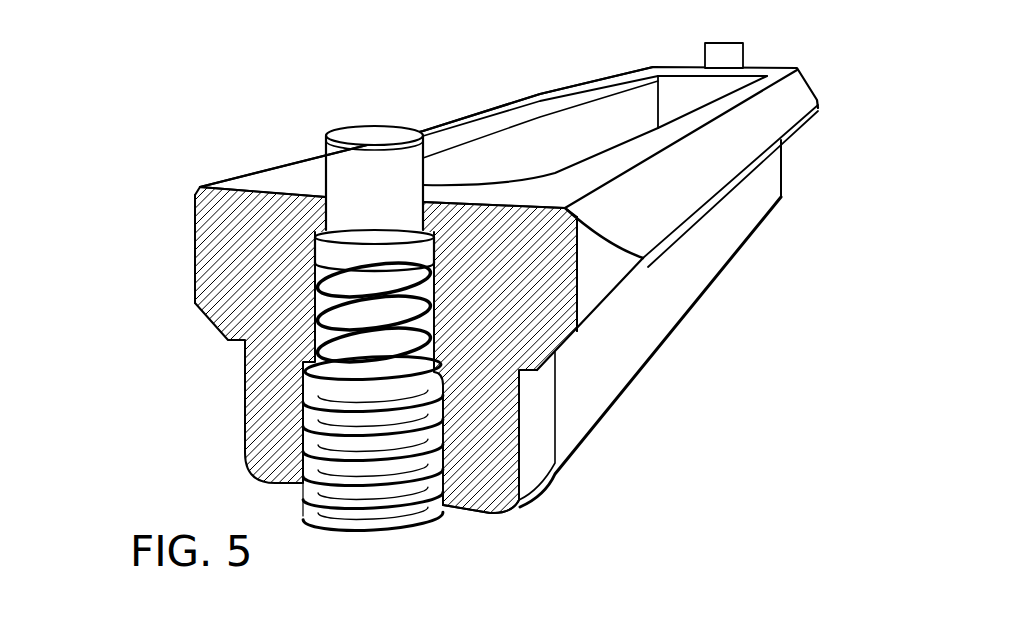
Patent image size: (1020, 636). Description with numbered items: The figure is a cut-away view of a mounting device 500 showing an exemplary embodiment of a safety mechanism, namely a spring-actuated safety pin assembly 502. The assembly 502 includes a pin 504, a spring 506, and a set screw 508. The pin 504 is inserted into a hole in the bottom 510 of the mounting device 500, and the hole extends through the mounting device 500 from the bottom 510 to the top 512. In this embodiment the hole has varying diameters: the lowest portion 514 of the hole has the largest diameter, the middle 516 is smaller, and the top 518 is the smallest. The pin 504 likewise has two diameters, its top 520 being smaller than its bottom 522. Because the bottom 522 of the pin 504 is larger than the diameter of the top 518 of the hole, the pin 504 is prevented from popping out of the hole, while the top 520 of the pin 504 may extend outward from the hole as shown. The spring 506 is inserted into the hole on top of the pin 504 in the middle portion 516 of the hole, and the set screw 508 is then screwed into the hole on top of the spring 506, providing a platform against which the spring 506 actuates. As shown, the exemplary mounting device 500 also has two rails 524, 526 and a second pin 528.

The mounting device 500 is at (437, 90).
The spring-actuated safety pin assembly 502 is at (470, 359).
The pin 504 is at (340, 156).
The spring 506 is at (573, 296).
The set screw 508 is at (437, 474).
The bottom 510 is at (460, 512).
The top 512 is at (284, 170).
The lowest portion 514 is at (297, 396).
The middle 516 is at (302, 316).
The top 518 is at (440, 213).
The top 520 is at (336, 208).
The bottom 522 is at (328, 250).
The rail 524 is at (672, 250).
The rail 526 is at (178, 222).
The second pin 528 is at (712, 53).